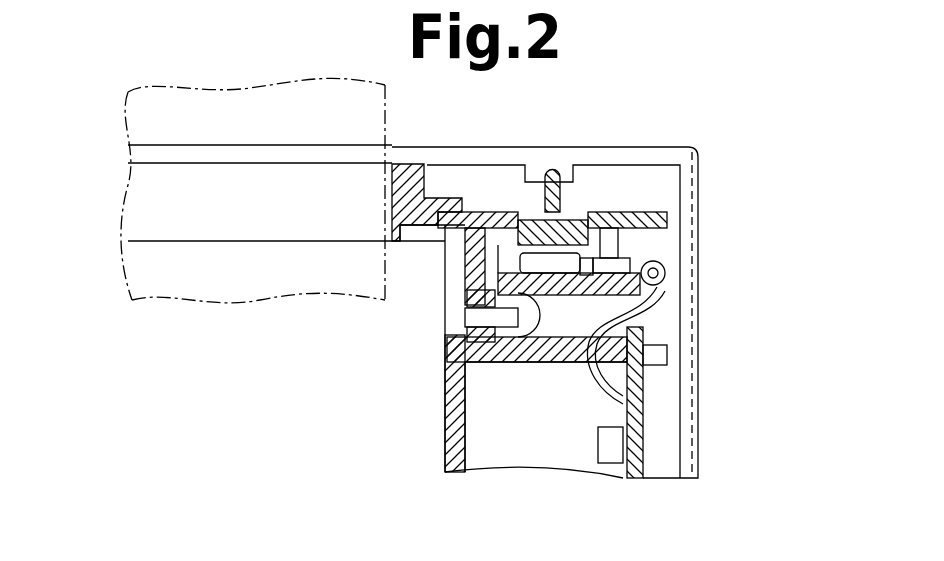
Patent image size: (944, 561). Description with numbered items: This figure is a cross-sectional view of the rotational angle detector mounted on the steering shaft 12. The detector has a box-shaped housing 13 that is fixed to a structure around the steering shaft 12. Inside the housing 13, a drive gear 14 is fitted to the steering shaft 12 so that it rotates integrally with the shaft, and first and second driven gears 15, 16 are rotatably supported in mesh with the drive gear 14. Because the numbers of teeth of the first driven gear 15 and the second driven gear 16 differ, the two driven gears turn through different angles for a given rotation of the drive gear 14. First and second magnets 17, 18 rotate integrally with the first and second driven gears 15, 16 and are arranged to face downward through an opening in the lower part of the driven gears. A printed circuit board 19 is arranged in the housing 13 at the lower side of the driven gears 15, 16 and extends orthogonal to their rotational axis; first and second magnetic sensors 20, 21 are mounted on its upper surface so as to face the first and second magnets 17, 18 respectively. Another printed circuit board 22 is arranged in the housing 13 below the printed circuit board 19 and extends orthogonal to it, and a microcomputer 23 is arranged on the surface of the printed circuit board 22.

The steering shaft 12 is at (210, 305).
The housing 13 is at (692, 365).
The drive gear 14 is at (410, 168).
The first driven gear 15 is at (503, 207).
The second driven gear 16 is at (520, 224).
The first magnet 17 is at (593, 212).
The second magnet 18 is at (647, 182).
The printed circuit board 19 is at (660, 283).
The first magnetic sensor 20 is at (628, 257).
The second magnetic sensor 21 is at (664, 259).
The printed circuit board 22 is at (632, 473).
The microcomputer 23 is at (598, 440).